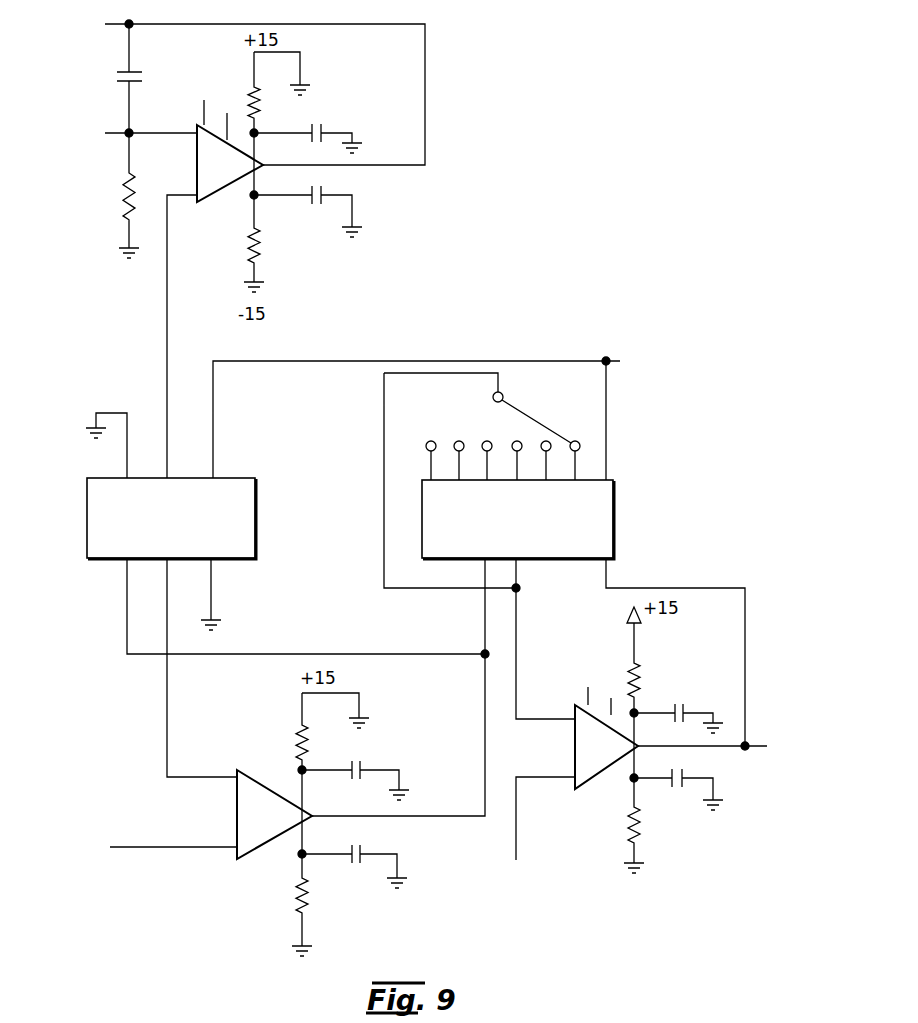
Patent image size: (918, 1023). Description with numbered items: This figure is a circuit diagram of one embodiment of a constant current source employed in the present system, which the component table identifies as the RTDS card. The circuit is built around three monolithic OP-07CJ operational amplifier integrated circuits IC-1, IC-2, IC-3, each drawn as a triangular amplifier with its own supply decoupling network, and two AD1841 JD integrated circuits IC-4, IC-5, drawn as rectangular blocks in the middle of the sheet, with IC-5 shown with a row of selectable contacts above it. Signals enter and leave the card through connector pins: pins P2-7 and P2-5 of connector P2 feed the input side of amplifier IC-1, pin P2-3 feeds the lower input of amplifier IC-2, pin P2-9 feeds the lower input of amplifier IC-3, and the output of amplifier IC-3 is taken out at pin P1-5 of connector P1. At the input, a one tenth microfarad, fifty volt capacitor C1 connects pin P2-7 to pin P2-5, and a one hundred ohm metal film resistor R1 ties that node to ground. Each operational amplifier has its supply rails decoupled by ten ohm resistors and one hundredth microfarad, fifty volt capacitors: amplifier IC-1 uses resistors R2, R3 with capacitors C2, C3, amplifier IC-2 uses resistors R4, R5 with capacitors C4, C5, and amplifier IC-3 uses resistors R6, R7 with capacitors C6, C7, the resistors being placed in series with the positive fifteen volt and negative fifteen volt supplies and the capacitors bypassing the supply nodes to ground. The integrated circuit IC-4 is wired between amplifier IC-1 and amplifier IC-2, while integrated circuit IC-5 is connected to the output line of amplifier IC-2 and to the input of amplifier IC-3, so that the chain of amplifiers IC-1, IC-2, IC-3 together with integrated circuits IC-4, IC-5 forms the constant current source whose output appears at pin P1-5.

The connector P2 pin 7 P2-7 is at (242, 89).
The connector P2 pin 5 P2-5 is at (128, 133).
The connector P2 pin 3 P2-3 is at (149, 847).
The connector P2 pin 9 P2-9 is at (536, 835).
The connector P1 pin 5 P1-5 is at (724, 746).
The capacitor C1 is at (115, 78).
The capacitor C2 is at (308, 126).
The capacitor C3 is at (306, 211).
The capacitor C4 is at (355, 768).
The capacitor C5 is at (352, 855).
The capacitor C6 is at (678, 709).
The capacitor C7 is at (676, 792).
The resistor R1 is at (117, 195).
The resistor R2 is at (279, 123).
The resistor R3 is at (266, 243).
The resistor R4 is at (332, 773).
The resistor R5 is at (314, 905).
The resistor R6 is at (648, 692).
The resistor R7 is at (647, 825).
The integrated circuit IC-1 is at (215, 289).
The integrated circuit IC-2 is at (274, 814).
The integrated circuit IC-3 is at (606, 738).
The integrated circuit IC-4 is at (353, 567).
The integrated circuit IC-5 is at (528, 588).